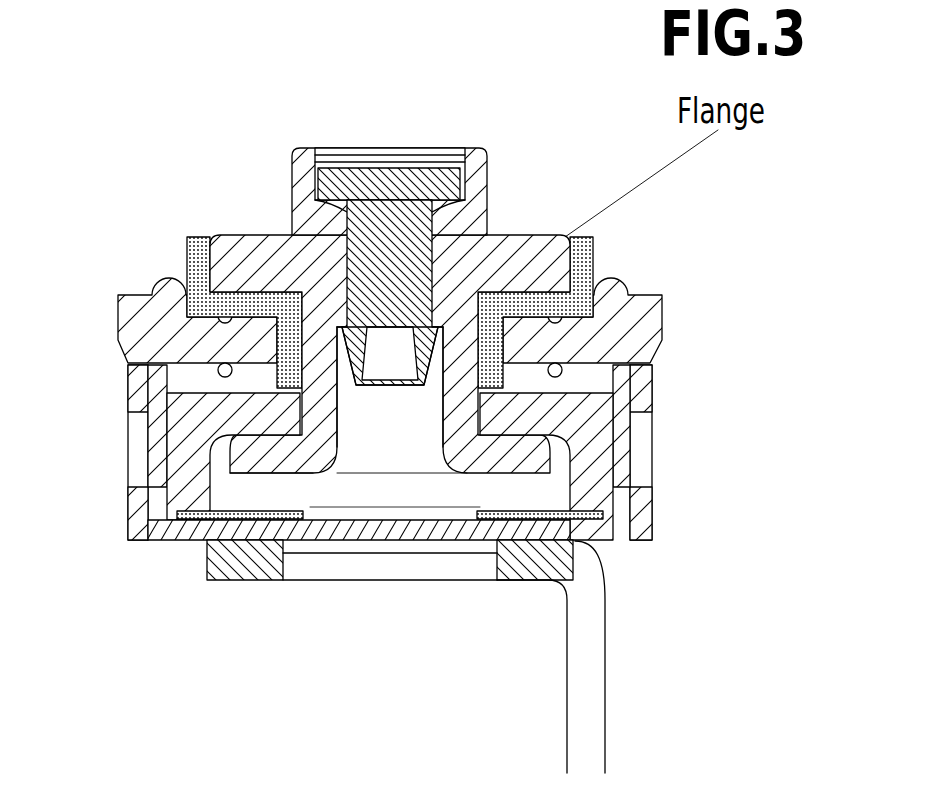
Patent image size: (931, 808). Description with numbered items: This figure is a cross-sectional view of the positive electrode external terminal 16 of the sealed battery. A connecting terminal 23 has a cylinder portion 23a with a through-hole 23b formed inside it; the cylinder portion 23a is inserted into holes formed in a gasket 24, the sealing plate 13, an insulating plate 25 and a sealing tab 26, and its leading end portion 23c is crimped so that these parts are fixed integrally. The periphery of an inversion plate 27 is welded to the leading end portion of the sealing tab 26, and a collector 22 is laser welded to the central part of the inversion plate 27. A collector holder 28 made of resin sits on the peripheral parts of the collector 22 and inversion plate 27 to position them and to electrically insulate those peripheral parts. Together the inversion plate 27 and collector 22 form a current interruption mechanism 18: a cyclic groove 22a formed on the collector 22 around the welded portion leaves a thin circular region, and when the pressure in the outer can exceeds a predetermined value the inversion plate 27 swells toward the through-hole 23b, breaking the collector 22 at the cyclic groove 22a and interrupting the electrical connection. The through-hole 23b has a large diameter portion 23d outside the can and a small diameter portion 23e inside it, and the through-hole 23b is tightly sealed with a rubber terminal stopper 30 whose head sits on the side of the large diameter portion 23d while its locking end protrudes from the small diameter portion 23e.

The sealing plate 13 is at (660, 298).
The positive electrode external terminal 16 is at (77, 40).
The current interruption mechanism 18 is at (383, 553).
The collector 22 is at (502, 578).
The cyclic groove 22a is at (470, 548).
The connecting terminal 23 is at (334, 359).
The cylinder portion 23a is at (323, 394).
The through-hole 23b is at (360, 397).
The leading end portion 23c is at (296, 466).
The large diameter portion 23d is at (330, 190).
The small diameter portion 23e is at (436, 260).
The gasket 24 is at (602, 231).
The insulating plate 25 is at (652, 373).
The sealing tab 26 is at (613, 505).
The inversion plate 27 is at (250, 530).
The collector holder 28 is at (175, 528).
The terminal stopper 30 is at (292, 233).